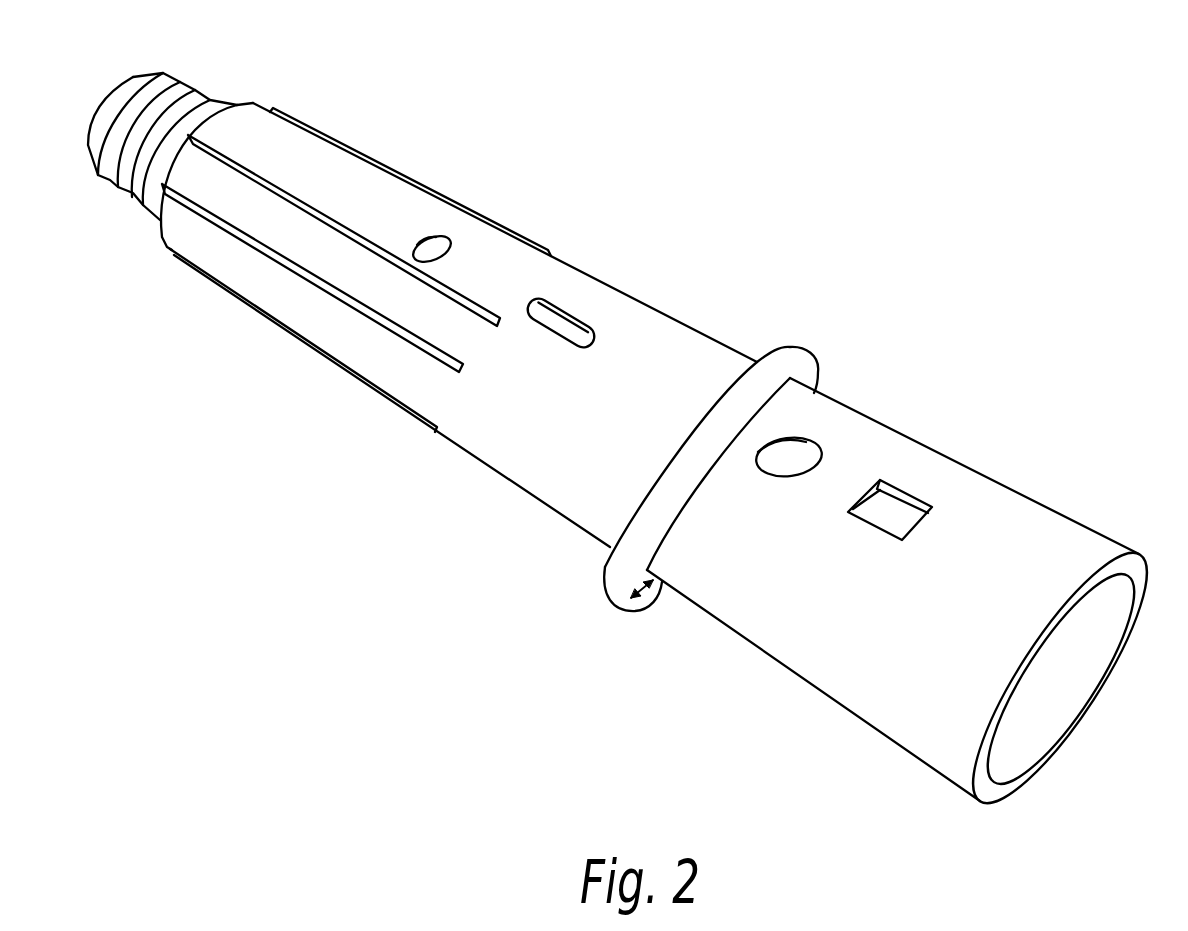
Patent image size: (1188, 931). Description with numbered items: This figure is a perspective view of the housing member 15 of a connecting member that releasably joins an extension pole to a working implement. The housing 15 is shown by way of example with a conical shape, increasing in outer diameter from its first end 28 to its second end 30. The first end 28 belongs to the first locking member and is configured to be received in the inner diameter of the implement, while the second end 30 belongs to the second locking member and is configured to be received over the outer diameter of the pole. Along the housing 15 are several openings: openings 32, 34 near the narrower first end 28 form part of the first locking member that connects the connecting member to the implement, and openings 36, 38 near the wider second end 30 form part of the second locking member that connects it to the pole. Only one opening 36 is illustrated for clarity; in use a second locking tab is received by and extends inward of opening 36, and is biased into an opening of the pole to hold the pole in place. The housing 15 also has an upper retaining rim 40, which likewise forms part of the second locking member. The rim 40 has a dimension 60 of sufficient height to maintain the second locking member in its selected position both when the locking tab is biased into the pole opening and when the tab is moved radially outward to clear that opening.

The housing member 15 is at (962, 677).
The first end 28 is at (175, 120).
The second end 30 is at (1062, 648).
The opening 32 is at (433, 252).
The opening 34 is at (563, 325).
The opening 36 is at (789, 460).
The opening 38 is at (890, 513).
The upper retaining rim 40 is at (800, 348).
The dimension 60 is at (642, 610).